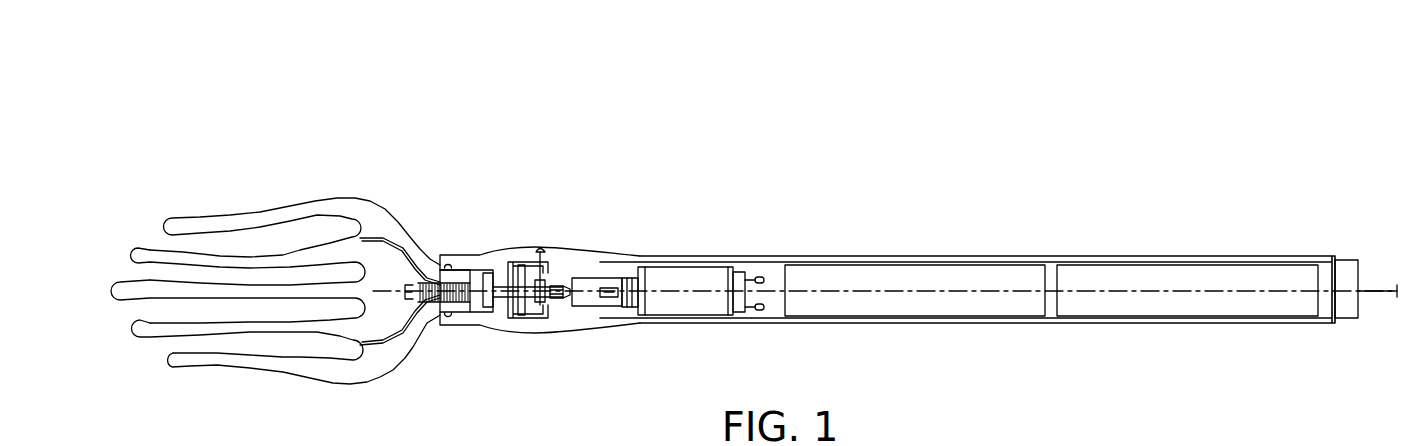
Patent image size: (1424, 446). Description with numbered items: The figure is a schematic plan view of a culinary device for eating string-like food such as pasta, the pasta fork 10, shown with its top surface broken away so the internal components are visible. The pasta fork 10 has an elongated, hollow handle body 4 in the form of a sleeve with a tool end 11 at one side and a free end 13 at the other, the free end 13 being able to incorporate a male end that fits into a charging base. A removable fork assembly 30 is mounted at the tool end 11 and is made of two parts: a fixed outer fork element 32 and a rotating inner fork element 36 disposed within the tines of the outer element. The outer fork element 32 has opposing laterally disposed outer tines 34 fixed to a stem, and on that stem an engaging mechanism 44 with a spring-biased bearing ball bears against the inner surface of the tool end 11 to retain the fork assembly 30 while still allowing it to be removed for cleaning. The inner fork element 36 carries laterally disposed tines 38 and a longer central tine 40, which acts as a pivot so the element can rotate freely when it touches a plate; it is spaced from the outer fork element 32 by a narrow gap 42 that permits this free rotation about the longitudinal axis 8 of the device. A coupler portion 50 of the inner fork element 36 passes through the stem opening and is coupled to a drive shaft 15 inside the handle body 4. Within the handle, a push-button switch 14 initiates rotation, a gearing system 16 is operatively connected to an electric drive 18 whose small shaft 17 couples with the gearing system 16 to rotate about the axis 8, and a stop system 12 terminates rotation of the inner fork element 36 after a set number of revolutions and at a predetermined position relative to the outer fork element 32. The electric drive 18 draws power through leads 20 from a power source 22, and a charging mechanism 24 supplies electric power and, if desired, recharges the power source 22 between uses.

The pasta fork 10 is at (748, 86).
The handle body 4 is at (848, 256).
The longitudinal axis 8 is at (1392, 296).
The tool end 11 is at (440, 255).
The stop system 12 is at (511, 262).
The free end 13 is at (568, 333).
The switch 14 is at (545, 250).
The drive shaft 15 is at (523, 305).
The gearing system 16 is at (605, 290).
The small shaft 17 is at (612, 288).
The electric drive 18 is at (697, 272).
The leads 20 is at (760, 312).
The power source 22 is at (958, 270).
The charging mechanism 24 is at (1350, 260).
The fork assembly 30 is at (379, 194).
The outer fork element 32 is at (239, 208).
The outer tines 34 is at (171, 362).
The inner fork element 36 is at (152, 234).
The tines 38 is at (137, 255).
The central tine 40 is at (118, 294).
The gap 42 is at (380, 347).
The engaging mechanism 44 is at (449, 316).
The coupler portion 50 is at (428, 303).